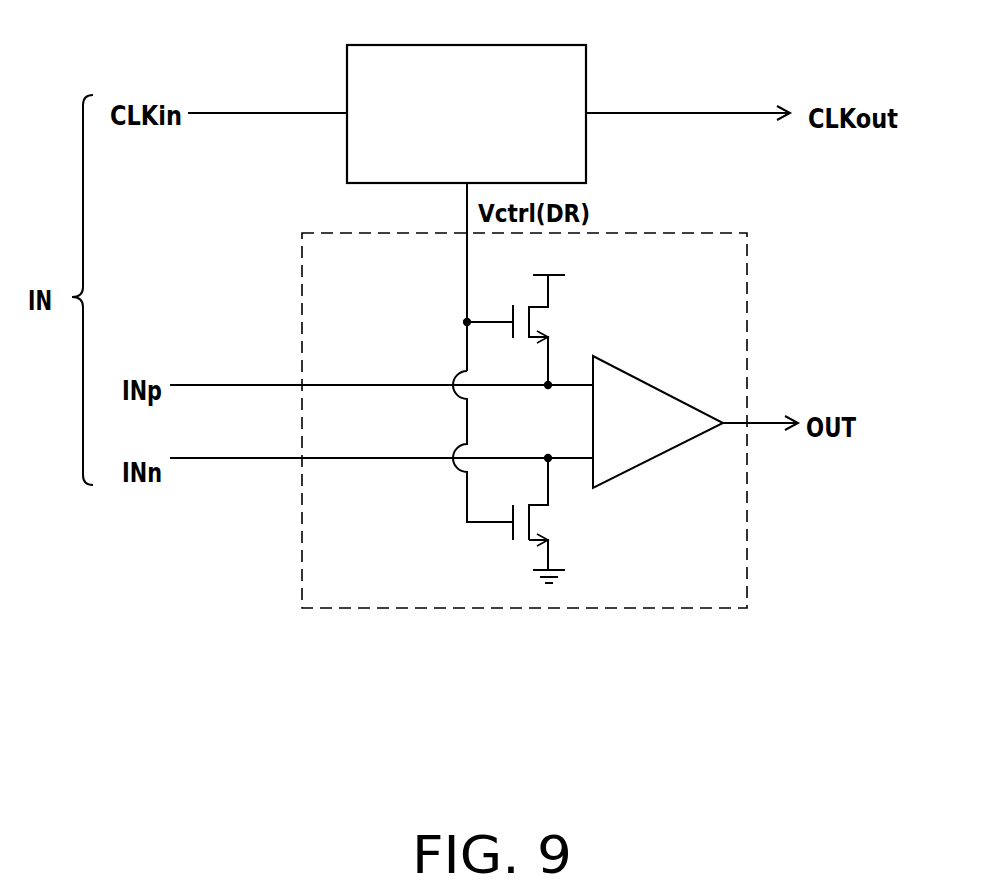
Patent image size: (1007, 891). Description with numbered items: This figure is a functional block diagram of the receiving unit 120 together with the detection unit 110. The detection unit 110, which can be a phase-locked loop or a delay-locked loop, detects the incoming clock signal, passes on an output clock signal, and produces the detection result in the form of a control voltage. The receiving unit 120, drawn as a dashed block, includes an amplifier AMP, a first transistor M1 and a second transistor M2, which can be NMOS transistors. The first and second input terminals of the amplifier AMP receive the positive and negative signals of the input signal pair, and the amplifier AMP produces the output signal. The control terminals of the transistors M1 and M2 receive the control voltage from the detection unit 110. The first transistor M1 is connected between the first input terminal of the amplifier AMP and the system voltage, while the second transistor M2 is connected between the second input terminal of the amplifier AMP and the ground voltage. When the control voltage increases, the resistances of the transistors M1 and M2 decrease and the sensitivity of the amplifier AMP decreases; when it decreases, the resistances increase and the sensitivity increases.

The detection unit 110 is at (586, 72).
The receiving unit 120 is at (747, 262).
The first transistor M1 is at (545, 320).
The second transistor M2 is at (545, 520).
The amplifier AMP is at (657, 458).